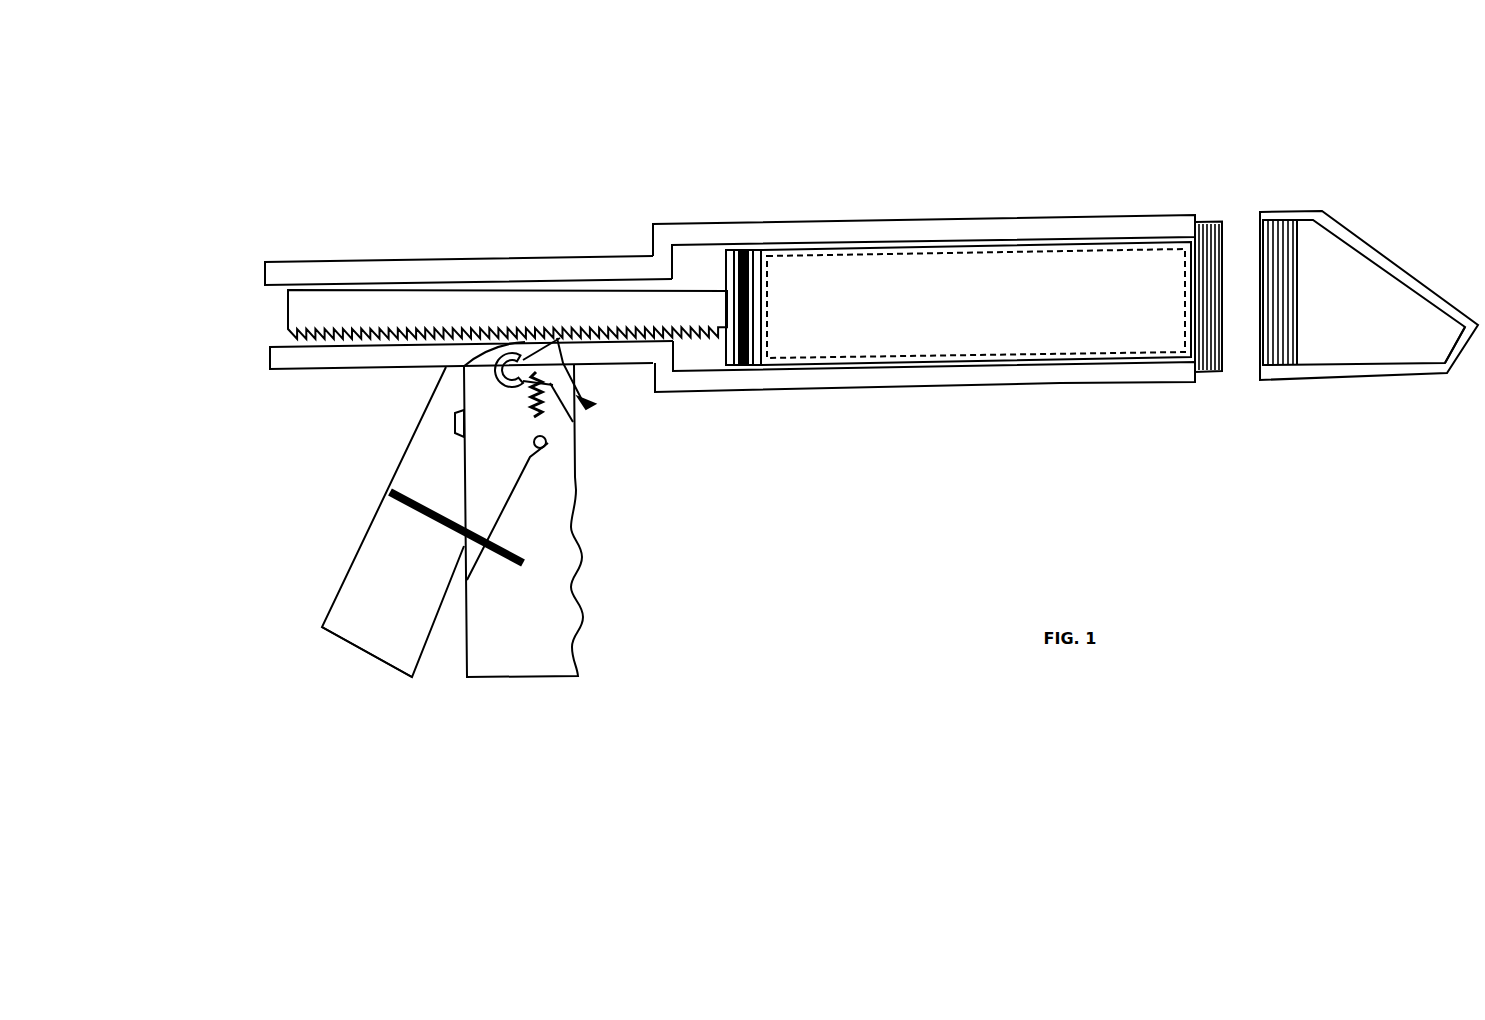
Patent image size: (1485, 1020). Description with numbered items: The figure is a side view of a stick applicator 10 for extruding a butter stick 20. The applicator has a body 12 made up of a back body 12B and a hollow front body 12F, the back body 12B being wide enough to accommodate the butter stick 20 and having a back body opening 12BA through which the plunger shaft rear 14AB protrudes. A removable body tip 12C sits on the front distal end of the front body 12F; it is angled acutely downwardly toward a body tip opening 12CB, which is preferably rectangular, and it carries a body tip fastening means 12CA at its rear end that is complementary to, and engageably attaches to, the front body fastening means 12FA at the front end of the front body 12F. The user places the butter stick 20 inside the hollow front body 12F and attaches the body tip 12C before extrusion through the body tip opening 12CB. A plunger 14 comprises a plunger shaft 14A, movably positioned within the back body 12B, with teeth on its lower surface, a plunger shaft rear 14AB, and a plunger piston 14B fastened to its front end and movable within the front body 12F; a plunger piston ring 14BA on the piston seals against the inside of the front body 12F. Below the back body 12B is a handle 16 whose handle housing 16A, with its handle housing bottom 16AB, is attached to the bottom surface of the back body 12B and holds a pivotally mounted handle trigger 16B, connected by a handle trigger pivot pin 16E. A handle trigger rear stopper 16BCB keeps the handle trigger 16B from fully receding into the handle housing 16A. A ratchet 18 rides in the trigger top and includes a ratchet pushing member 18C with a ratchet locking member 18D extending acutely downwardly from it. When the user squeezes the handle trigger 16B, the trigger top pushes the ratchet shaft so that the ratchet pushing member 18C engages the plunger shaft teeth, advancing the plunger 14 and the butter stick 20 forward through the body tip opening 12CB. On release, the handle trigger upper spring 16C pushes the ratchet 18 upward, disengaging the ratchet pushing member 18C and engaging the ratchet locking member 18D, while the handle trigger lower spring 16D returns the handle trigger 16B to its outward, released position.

The stick applicator 10 is at (864, 80).
The body 12 is at (607, 255).
The back body 12B is at (383, 261).
The back body opening 12BA is at (263, 310).
The removable body tip 12C is at (1403, 270).
The body tip fastening means 12CA is at (1276, 230).
The body tip opening 12CB is at (1447, 342).
The hollow front body 12F is at (1046, 227).
The front body fastening means 12FA is at (1205, 222).
The plunger 14 is at (712, 278).
The plunger shaft 14A is at (527, 298).
The plunger shaft rear 14AB is at (287, 322).
The plunger piston 14B is at (763, 267).
The plunger piston ring 14BA is at (741, 252).
The handle 16 is at (328, 645).
The handle housing 16A is at (359, 540).
The handle housing bottom 16AB is at (370, 652).
The handle trigger 16B is at (574, 557).
The handle trigger rear stopper 16BCB is at (454, 421).
The handle trigger upper spring 16C is at (542, 386).
The handle trigger lower spring 16D is at (390, 497).
The handle trigger pivot pin 16E is at (548, 445).
The ratchet 18 is at (489, 377).
The ratchet pushing member 18C is at (560, 346).
The ratchet locking member 18D is at (592, 404).
The butter stick 20 is at (965, 309).